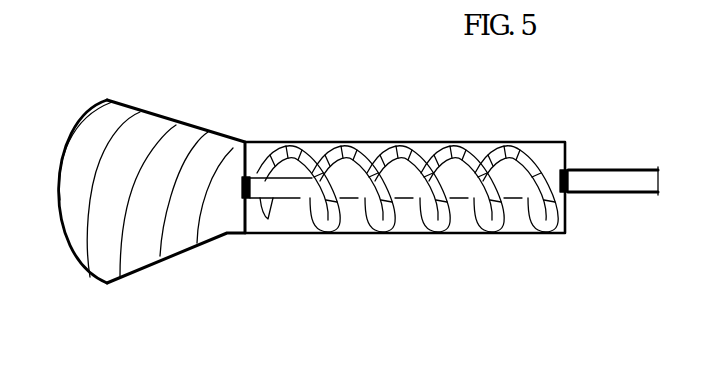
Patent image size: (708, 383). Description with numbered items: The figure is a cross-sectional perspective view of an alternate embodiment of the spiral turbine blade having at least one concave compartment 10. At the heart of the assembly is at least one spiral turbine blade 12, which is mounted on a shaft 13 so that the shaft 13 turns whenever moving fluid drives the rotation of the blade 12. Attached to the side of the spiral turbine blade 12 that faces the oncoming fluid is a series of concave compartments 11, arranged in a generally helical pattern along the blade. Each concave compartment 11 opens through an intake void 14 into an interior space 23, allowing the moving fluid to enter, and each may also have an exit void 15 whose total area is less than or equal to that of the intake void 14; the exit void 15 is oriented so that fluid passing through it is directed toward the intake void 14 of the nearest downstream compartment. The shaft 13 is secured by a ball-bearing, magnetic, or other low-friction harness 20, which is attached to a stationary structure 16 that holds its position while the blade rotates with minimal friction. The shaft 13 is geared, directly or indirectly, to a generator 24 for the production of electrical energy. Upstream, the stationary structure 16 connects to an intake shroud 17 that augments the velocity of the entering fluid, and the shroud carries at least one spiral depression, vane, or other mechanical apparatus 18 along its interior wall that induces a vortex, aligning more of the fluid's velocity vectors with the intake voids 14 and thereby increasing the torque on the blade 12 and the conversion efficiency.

The spiral turbine blade having at least one concave compartment 10 is at (260, 267).
The concave compartment 11 is at (285, 178).
The spiral turbine blade 12 is at (315, 200).
The shaft 13 is at (365, 205).
The intake void 14 is at (440, 220).
The exit void 15 is at (490, 217).
The stationary structure 16 is at (525, 215).
The intake shroud 17 is at (95, 172).
The spiral depression, vane, or other mechanical apparatus 18 is at (90, 232).
The low-friction harness 20 is at (577, 197).
The interior space 23 is at (348, 188).
The generator 24 is at (630, 182).